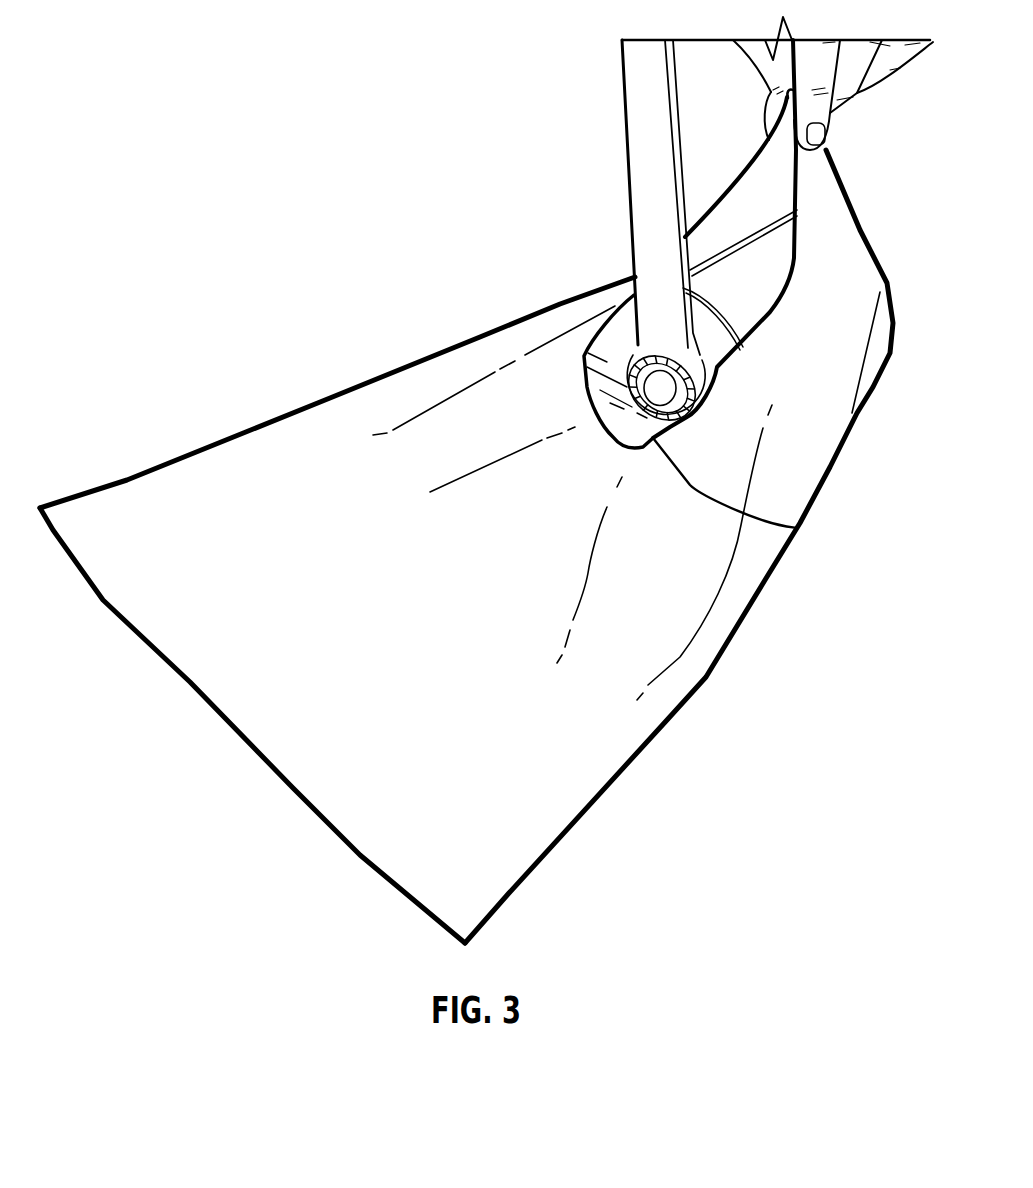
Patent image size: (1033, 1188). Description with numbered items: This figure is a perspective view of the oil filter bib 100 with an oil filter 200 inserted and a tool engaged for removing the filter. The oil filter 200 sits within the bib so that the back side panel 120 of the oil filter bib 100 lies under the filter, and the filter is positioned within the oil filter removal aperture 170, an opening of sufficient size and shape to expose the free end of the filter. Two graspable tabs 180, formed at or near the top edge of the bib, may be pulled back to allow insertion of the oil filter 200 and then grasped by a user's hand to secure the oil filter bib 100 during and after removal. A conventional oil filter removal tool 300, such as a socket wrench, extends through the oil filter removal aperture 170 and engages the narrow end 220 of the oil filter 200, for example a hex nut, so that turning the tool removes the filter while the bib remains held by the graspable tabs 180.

The oil filter bib 100 is at (167, 441).
The back side panel 120 is at (607, 402).
The oil filter removal aperture 170 is at (797, 528).
The graspable tabs 180 is at (777, 167).
The oil filter 200 is at (767, 272).
The narrow end 220 is at (627, 383).
The oil filter removal tool 300 is at (647, 208).